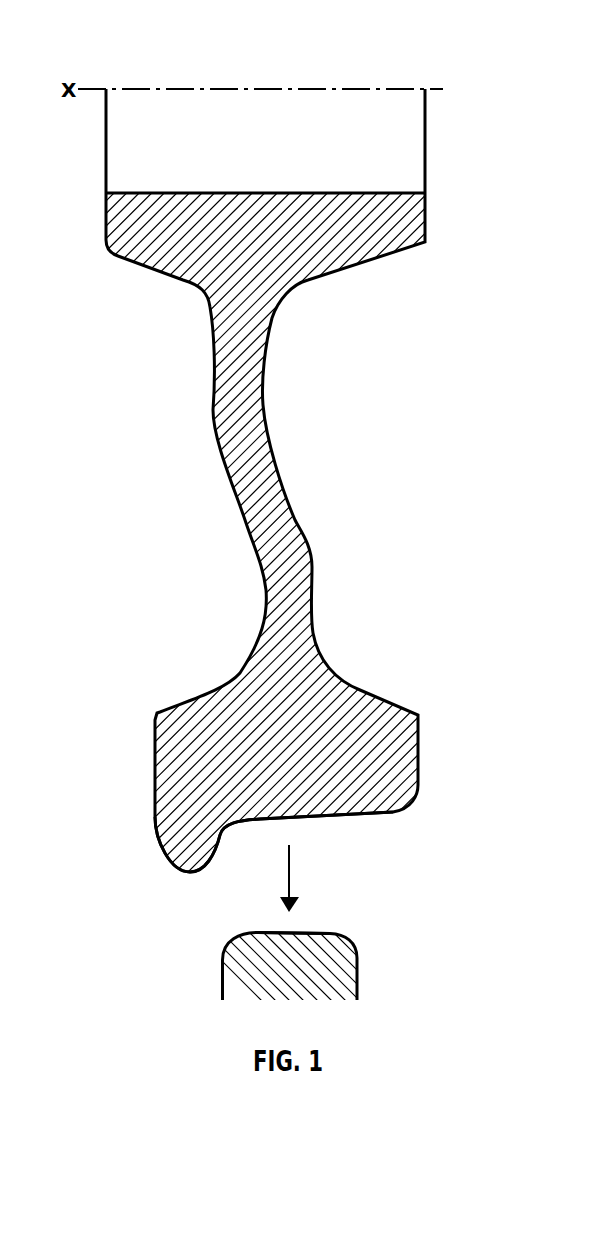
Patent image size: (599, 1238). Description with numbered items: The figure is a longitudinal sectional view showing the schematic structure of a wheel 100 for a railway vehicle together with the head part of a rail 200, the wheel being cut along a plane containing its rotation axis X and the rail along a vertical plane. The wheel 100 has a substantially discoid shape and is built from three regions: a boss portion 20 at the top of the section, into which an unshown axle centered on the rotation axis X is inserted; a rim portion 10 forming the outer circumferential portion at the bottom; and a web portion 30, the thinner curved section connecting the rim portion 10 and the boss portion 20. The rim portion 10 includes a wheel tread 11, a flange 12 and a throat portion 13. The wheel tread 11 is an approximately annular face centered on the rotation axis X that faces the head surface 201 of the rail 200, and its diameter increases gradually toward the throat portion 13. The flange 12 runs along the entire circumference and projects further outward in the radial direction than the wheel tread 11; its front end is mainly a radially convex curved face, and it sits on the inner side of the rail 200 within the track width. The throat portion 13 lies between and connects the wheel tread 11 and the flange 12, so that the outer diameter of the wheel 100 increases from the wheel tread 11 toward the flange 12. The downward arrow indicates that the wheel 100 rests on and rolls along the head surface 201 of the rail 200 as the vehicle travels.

The wheel 100 is at (411, 77).
The rim portion 10 is at (420, 750).
The wheel tread 11 is at (356, 817).
The flange 12 is at (162, 853).
The throat portion 13 is at (248, 823).
The boss portion 20 is at (427, 217).
The web portion 30 is at (272, 438).
The rail 200 is at (366, 972).
The head surface 201 is at (313, 931).